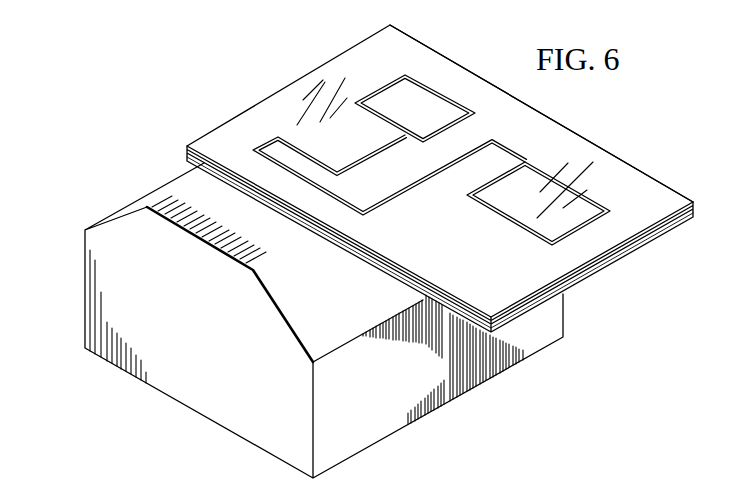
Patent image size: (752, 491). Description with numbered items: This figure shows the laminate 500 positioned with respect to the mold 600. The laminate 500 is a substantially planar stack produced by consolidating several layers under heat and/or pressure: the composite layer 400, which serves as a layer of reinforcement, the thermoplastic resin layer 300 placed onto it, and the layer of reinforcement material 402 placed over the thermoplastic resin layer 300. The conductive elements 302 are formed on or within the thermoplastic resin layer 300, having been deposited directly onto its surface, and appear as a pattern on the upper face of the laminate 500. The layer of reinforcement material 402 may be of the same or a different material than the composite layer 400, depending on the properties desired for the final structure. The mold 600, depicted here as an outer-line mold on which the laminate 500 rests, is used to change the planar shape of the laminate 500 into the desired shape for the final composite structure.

The thermoplastic resin layer 300 is at (186, 146).
The conductive elements 302 is at (658, 181).
The composite layer 400 is at (372, 262).
The layer of reinforcement material 402 is at (288, 89).
The laminate 500 is at (235, 115).
The mold 600 is at (85, 288).